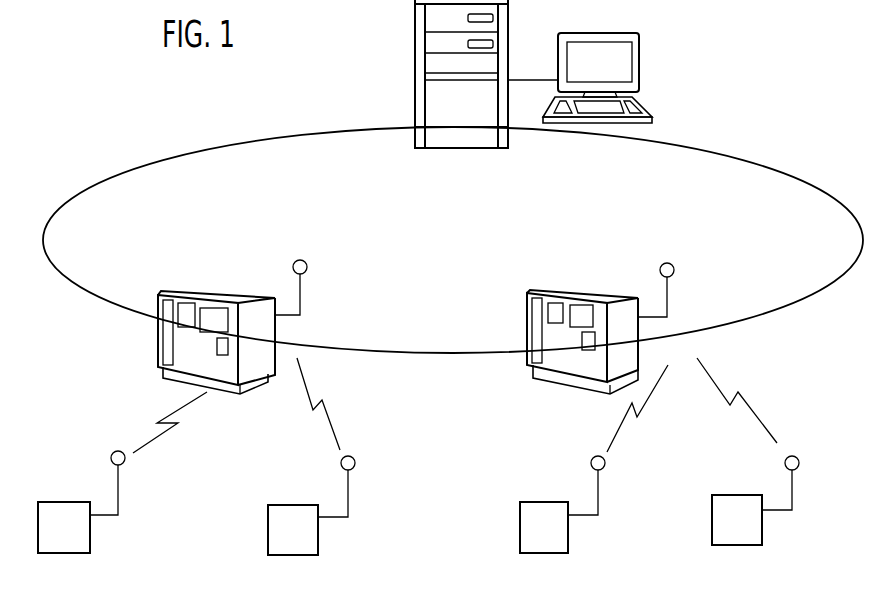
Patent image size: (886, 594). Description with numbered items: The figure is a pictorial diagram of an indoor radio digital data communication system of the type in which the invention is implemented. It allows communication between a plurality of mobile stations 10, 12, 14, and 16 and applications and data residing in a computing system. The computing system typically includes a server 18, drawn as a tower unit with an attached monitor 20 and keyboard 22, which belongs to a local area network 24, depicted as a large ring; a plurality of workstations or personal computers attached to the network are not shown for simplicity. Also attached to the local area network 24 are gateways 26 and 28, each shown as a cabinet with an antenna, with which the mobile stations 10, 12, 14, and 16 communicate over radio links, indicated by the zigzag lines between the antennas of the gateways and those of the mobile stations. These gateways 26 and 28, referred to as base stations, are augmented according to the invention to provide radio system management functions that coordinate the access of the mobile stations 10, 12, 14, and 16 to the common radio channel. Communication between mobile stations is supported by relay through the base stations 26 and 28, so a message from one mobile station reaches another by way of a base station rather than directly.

The mobile station 10 is at (90, 500).
The mobile station 12 is at (295, 503).
The mobile station 14 is at (545, 500).
The mobile station 16 is at (740, 494).
The server 18 is at (413, 27).
The monitor 20 is at (641, 48).
The keyboard 22 is at (648, 112).
The local area network 24 is at (840, 277).
The gateway 26 is at (222, 291).
The gateway 28 is at (592, 290).